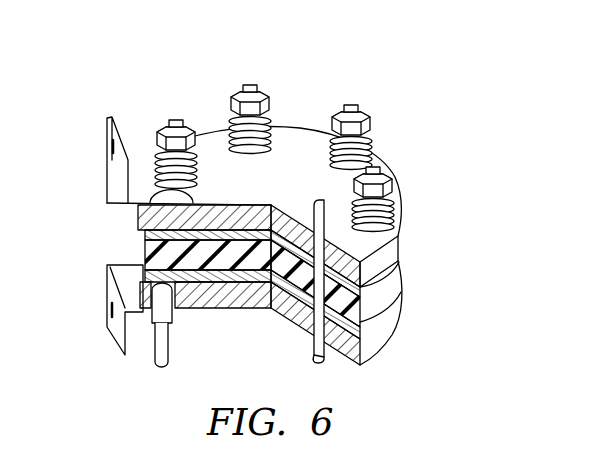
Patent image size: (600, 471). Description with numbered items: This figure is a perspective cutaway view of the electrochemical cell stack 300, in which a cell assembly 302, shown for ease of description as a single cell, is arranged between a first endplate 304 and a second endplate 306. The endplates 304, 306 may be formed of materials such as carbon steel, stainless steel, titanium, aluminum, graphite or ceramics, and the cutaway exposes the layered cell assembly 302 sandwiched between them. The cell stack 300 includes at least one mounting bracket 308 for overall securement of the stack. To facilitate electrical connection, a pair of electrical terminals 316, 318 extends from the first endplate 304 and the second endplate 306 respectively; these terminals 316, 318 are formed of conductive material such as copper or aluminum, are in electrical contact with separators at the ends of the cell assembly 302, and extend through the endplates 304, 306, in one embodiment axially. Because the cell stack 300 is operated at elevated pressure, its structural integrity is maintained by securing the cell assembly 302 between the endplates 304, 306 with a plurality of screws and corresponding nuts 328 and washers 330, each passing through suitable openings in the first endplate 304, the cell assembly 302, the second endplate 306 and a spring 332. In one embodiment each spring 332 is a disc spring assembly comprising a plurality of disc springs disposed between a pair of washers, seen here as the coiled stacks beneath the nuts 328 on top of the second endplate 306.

The electrochemical cell stack 300 is at (444, 128).
The cell assembly 302 is at (118, 254).
The first endplate 304 is at (387, 328).
The second endplate 306 is at (396, 238).
The mounting bracket 308 is at (107, 133).
The electrical terminal 316 is at (320, 352).
The electrical terminal 318 is at (313, 203).
The nut 328 is at (239, 86).
The washer 330 is at (280, 137).
The spring 332 is at (228, 130).